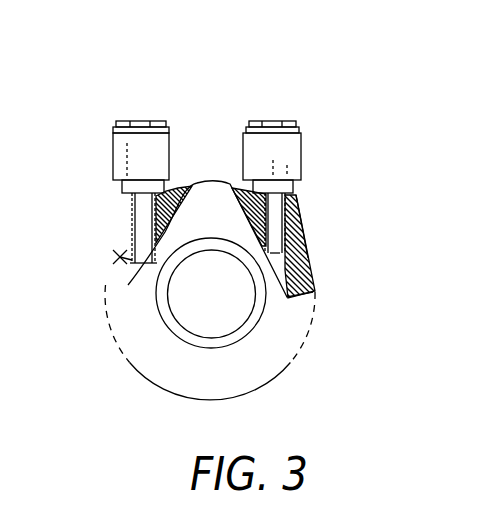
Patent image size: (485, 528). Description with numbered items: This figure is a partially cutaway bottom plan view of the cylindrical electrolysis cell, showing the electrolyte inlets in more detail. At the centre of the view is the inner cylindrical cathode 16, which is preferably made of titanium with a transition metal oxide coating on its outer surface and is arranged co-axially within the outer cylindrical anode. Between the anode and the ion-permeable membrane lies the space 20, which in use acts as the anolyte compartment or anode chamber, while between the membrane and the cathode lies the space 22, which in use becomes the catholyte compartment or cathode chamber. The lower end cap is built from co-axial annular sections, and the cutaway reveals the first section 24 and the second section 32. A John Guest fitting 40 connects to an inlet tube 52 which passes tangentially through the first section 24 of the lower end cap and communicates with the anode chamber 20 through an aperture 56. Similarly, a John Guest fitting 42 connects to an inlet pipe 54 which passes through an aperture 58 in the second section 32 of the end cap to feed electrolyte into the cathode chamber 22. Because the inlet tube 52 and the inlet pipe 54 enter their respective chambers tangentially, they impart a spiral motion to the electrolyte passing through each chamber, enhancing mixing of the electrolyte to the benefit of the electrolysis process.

The inner cylindrical cathode 16 is at (257, 316).
The anolyte compartment space 20 is at (128, 285).
The catholyte compartment space 22 is at (307, 273).
The first annular section 24 is at (121, 249).
The second annular section 32 is at (293, 227).
The John Guest fitting 40 is at (158, 144).
The John Guest fitting 42 is at (290, 153).
The inlet tube 52 is at (133, 211).
The inlet pipe 54 is at (290, 213).
The aperture 56 is at (118, 260).
The aperture 58 is at (298, 248).